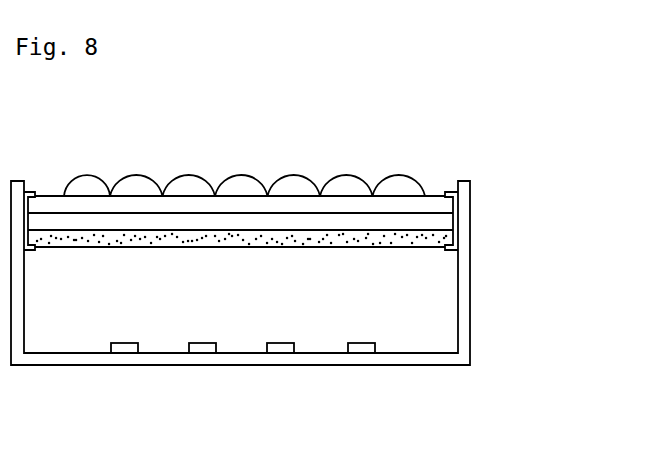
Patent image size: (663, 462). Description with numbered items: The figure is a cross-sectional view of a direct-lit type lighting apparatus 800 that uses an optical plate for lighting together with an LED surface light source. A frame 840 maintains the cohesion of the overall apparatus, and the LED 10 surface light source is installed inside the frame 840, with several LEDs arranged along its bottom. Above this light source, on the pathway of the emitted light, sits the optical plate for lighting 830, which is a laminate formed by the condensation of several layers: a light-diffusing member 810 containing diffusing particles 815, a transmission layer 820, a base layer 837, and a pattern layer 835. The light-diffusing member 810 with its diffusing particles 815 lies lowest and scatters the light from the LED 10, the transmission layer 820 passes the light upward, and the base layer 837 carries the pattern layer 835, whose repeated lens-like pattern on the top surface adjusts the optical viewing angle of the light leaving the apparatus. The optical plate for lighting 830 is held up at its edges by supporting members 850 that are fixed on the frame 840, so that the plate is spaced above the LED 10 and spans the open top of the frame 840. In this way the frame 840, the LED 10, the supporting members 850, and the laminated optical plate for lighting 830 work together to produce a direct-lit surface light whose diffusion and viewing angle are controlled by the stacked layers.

The direct-lit type lighting apparatus 800 is at (347, 135).
The LED 10 is at (365, 349).
The light-diffusing member 810 is at (440, 232).
The diffusing particle 815 is at (453, 246).
The transmission layer 820 is at (430, 220).
The optical plate for lighting 830 is at (312, 164).
The pattern layer 835 is at (410, 173).
The base layer 837 is at (420, 196).
The frame 840 is at (466, 325).
The supporting member 850 is at (30, 231).